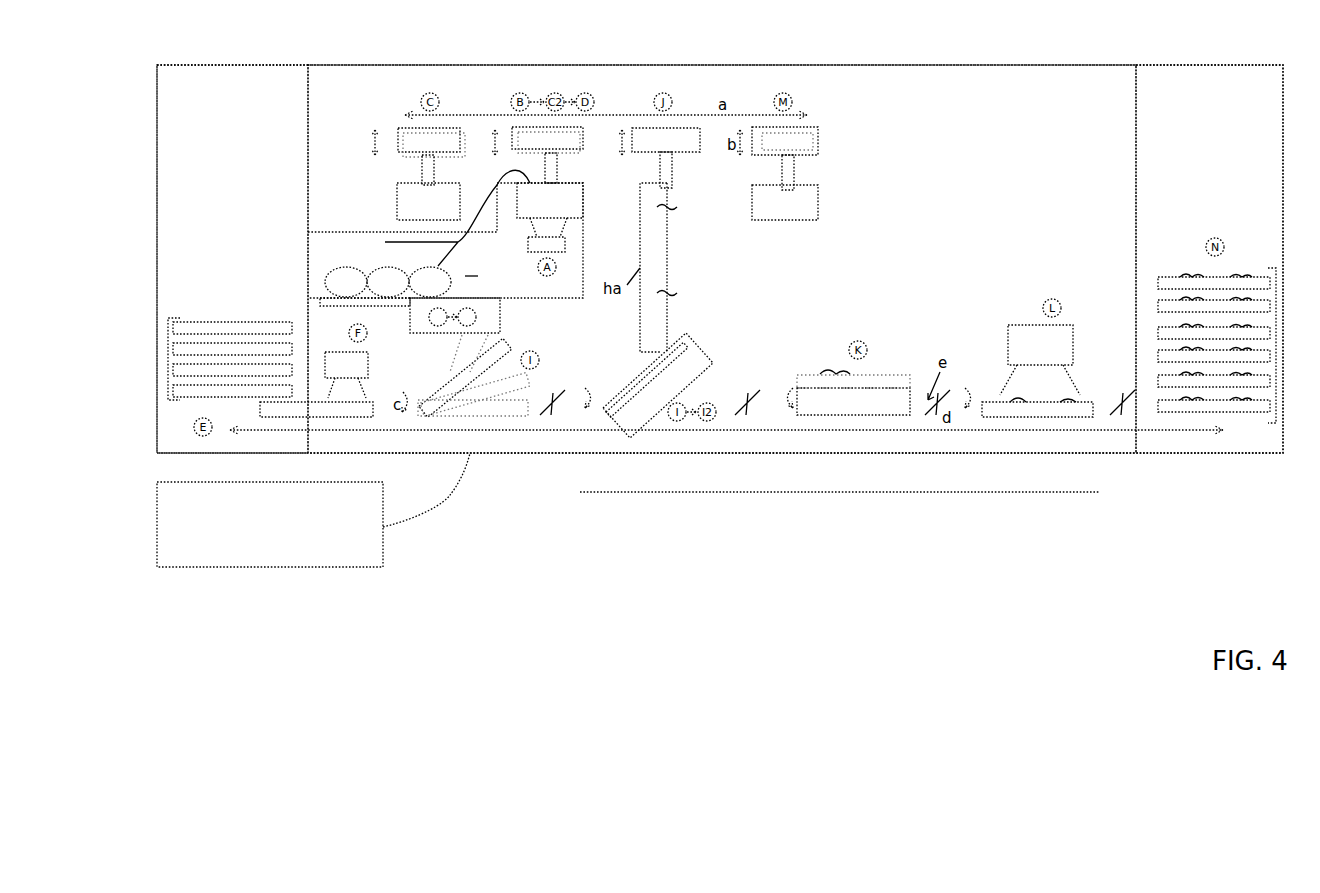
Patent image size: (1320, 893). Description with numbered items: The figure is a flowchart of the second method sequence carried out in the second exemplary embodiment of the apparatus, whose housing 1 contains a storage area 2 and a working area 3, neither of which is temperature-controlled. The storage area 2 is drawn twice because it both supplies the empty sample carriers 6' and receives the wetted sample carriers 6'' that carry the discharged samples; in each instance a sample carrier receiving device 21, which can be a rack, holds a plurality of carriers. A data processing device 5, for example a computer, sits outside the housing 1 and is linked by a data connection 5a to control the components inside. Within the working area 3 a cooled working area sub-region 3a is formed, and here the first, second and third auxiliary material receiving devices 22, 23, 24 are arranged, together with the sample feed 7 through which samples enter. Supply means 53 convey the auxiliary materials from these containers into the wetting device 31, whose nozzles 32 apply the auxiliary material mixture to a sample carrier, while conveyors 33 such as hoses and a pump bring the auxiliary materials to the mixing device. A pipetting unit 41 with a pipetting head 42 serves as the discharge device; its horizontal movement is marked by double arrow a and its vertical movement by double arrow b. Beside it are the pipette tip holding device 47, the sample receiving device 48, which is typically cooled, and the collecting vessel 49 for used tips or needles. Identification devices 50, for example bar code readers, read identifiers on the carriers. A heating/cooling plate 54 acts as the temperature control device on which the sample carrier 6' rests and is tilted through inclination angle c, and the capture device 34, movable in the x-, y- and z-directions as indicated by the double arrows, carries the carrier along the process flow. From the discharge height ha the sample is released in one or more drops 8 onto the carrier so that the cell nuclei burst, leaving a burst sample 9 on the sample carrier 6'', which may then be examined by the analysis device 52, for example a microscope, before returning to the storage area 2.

The housing 1 is at (377, 65).
The storage area 2 is at (171, 72).
The working area 3 is at (726, 68).
The cooled working area sub-region 3a is at (563, 298).
The data processing device 5 is at (370, 558).
The data connection 5a is at (449, 503).
The empty sample carrier 6' is at (283, 352).
The wetted sample carrier carrying discharged samples 6'' is at (984, 325).
The sample feed 7 is at (471, 266).
The drop of the sample 8 is at (672, 186).
The burst sample 9 is at (630, 382).
The sample carrier receiving device 21 is at (168, 336).
The first auxiliary material receiving device 22 is at (350, 268).
The second auxiliary material receiving device 23 is at (430, 266).
The third auxiliary material receiving device 24 is at (338, 268).
The wetting device 31 is at (505, 318).
The nozzles 32 is at (437, 341).
The conveyors 33 is at (365, 307).
The capture device 34 is at (857, 433).
The pipetting unit 41 is at (402, 130).
The pipetting head 42 is at (435, 163).
The pipette tip holding device 47 is at (405, 206).
The sample receiving device 48 is at (583, 206).
The collecting vessel 49 is at (755, 200).
The identification device 50 is at (528, 250).
The analysis device 52 is at (1032, 330).
The supply means 53 is at (385, 242).
The heating/cooling plate 54 is at (703, 352).